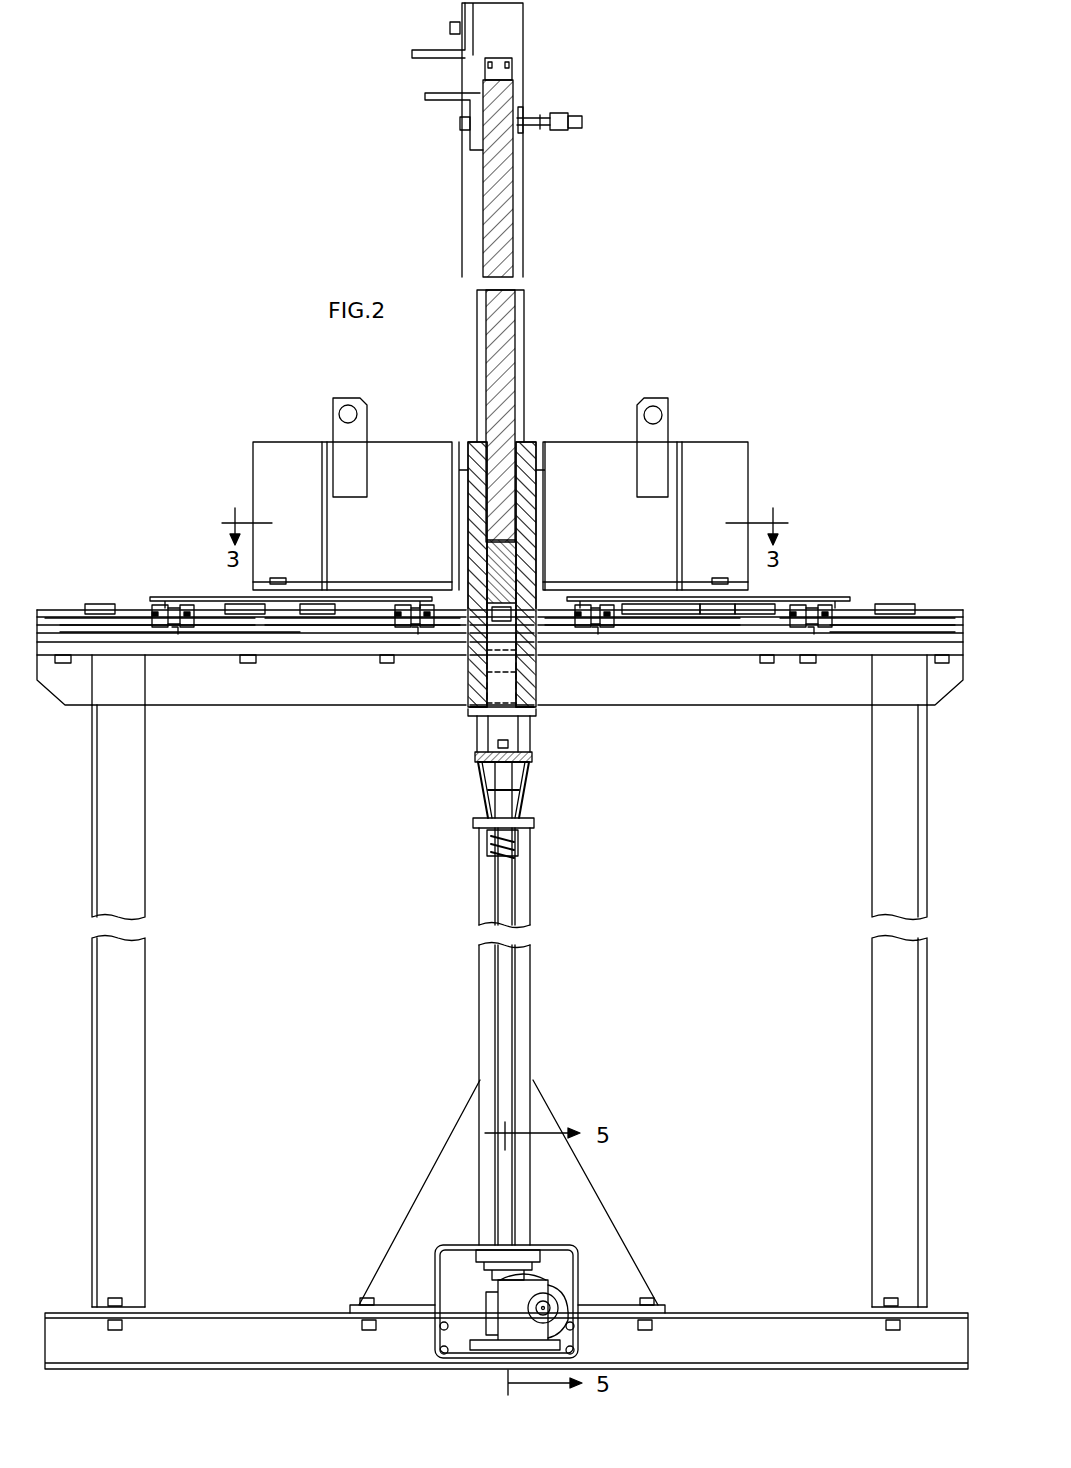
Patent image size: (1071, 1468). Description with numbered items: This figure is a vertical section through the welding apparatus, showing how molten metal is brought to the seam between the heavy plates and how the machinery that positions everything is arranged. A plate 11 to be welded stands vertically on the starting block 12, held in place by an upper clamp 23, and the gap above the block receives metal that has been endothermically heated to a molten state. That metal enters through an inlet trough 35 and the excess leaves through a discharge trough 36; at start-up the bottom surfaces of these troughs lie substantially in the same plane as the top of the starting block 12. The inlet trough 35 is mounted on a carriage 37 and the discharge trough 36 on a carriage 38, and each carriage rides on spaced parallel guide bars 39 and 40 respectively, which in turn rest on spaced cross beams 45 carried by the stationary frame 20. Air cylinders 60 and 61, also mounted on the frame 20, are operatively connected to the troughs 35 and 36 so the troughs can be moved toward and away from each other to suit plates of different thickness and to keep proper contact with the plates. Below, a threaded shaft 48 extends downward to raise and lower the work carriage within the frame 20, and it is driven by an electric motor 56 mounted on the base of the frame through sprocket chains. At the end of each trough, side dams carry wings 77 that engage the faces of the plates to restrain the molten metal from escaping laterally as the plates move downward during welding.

The member to be welded 11 is at (512, 316).
The starting block 12 is at (516, 556).
The stationary frame 20 is at (128, 982).
The upper clamp 23 is at (538, 118).
The inlet trough 35 is at (428, 440).
The discharge trough 36 is at (594, 440).
The carriage 37 is at (310, 640).
The carriage 38 is at (700, 640).
The guide bar 39 is at (222, 640).
The guide bar 40 is at (808, 640).
The cross beam 45 is at (380, 640).
The threaded shaft 48 is at (510, 976).
The electric motor 56 is at (527, 1298).
The air cylinder 60 is at (200, 605).
The air cylinder 61 is at (790, 605).
The wing 77 is at (532, 446).